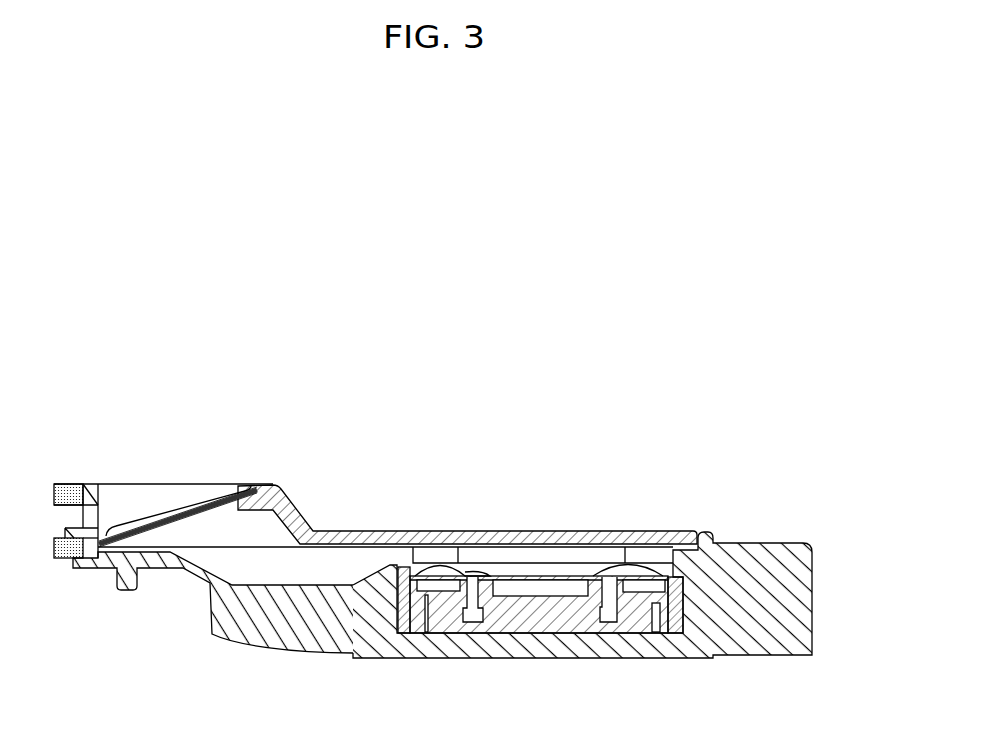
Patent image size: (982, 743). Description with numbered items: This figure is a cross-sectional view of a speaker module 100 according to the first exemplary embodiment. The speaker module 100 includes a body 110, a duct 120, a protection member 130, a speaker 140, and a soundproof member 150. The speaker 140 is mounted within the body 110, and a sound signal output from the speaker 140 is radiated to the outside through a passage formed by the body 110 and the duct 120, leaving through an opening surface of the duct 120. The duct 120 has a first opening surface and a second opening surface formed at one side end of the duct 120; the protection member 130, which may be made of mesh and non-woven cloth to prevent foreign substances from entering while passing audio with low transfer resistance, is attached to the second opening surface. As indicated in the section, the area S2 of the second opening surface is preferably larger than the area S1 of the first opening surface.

The speaker module 100 is at (655, 473).
The body 110 is at (793, 595).
The duct 120 is at (165, 567).
The protection member 130 is at (250, 488).
The speaker 140 is at (541, 588).
The soundproof member 150 is at (63, 558).
The area of the first opening surface S1 is at (52, 507).
The area of the second opening surface S2 is at (183, 507).